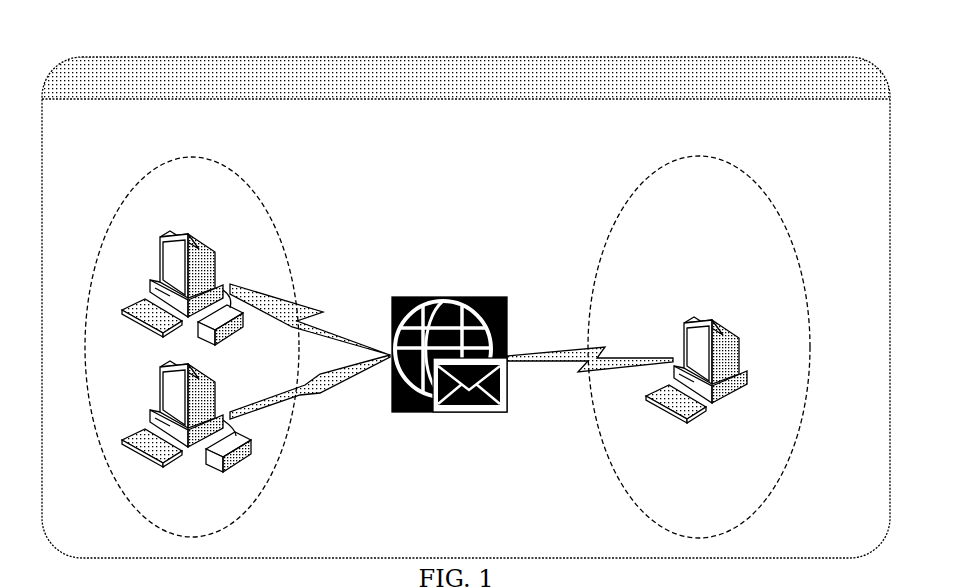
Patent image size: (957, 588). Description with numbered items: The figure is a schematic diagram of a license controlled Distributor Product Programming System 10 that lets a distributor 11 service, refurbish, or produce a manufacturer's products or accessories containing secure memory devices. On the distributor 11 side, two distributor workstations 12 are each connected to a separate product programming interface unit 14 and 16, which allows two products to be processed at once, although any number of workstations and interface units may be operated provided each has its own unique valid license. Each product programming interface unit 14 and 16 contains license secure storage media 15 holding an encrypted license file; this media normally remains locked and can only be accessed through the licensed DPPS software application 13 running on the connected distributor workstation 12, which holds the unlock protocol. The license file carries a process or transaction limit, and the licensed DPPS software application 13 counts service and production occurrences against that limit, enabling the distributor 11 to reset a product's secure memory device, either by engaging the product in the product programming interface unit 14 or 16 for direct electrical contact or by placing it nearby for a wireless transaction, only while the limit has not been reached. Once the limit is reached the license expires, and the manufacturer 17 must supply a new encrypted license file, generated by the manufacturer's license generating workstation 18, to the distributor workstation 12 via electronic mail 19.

The license controlled Distributor Product Programming System (DPPS) 10 is at (345, 57).
The distributor 11 is at (152, 172).
The distributor workstation 12 is at (163, 259).
The licensed DPPS software application 13 is at (172, 300).
The product programming interface unit 14 is at (205, 335).
The license secure storage media 15 is at (247, 435).
The product programming interface unit 16 is at (216, 462).
The manufacturer 17 is at (750, 177).
The manufacturer's license generating workstation 18 is at (748, 377).
The electronic mail 19 is at (447, 298).